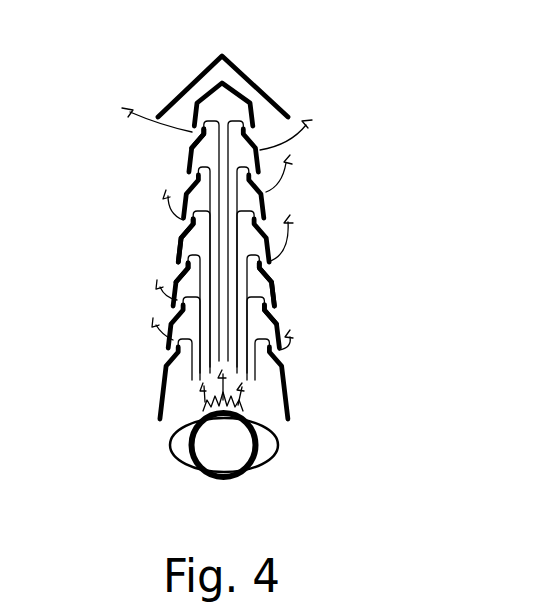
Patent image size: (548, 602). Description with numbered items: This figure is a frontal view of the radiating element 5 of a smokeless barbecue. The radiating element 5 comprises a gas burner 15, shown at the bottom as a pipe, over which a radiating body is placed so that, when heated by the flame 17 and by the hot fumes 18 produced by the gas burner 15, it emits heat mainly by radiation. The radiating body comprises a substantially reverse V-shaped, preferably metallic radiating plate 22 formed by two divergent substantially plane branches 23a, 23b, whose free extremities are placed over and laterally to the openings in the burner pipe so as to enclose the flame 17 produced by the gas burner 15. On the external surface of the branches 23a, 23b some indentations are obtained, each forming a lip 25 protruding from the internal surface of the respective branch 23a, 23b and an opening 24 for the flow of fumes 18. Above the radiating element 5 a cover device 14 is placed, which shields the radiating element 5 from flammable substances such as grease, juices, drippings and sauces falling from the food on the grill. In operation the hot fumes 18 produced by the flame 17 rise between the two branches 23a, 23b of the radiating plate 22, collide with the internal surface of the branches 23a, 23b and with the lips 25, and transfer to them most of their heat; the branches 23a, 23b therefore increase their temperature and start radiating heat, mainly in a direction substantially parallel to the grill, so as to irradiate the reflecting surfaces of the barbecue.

The radiating element 5 is at (318, 275).
The cover device 14 is at (245, 68).
The gas burner 15 is at (253, 475).
The flame 17 is at (245, 410).
The hot fumes 18 is at (138, 120).
The radiating plate 22 is at (143, 368).
The branch 23a is at (292, 400).
The branch 23b is at (157, 398).
The opening 24 is at (187, 183).
The lip 25 is at (177, 270).